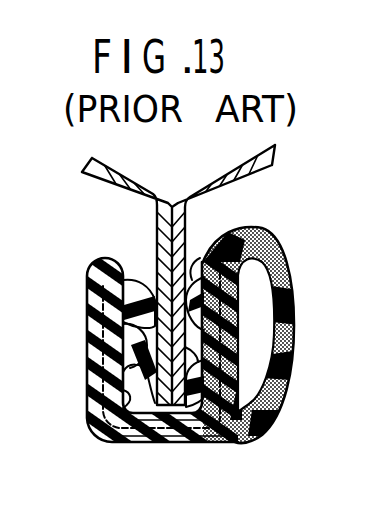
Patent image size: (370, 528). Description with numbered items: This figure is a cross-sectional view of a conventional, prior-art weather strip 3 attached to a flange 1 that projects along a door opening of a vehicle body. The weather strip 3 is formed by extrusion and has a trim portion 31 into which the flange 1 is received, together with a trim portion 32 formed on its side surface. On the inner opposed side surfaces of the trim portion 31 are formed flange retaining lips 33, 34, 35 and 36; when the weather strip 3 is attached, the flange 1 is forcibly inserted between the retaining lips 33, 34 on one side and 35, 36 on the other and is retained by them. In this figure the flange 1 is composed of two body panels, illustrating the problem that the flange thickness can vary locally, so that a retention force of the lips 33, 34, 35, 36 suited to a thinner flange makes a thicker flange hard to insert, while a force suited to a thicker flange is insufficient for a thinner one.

The flange 1 is at (153, 278).
The weather strip 3 is at (87, 363).
The trim portion 31 is at (163, 445).
The trim portion 32 is at (276, 288).
The flange retaining lip 33 is at (200, 258).
The flange retaining lip 34 is at (195, 444).
The flange retaining lip 35 is at (122, 331).
The flange retaining lip 36 is at (125, 428).